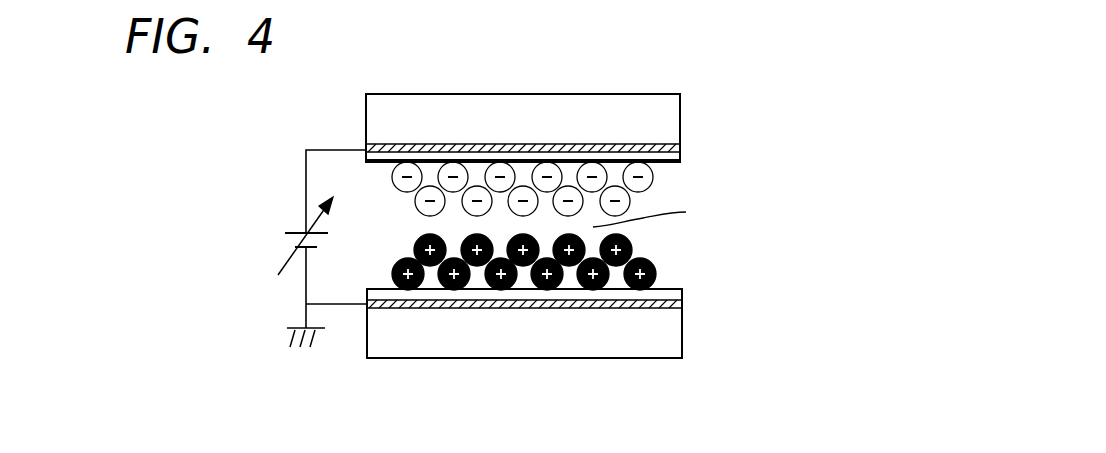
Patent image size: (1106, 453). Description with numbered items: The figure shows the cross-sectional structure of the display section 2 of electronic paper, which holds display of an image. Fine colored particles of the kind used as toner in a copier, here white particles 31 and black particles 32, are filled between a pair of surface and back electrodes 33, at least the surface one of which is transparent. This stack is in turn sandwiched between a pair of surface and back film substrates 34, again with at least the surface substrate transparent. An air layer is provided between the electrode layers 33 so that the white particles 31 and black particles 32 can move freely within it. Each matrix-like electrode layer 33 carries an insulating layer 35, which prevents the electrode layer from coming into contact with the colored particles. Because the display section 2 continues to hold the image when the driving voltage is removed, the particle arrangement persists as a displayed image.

The display section 2 is at (345, 85).
The white particles 31 is at (600, 176).
The black particles 32 is at (632, 249).
The electrodes 33 is at (592, 142).
The film substrates 34 is at (587, 110).
The insulating layer 35 is at (680, 147).